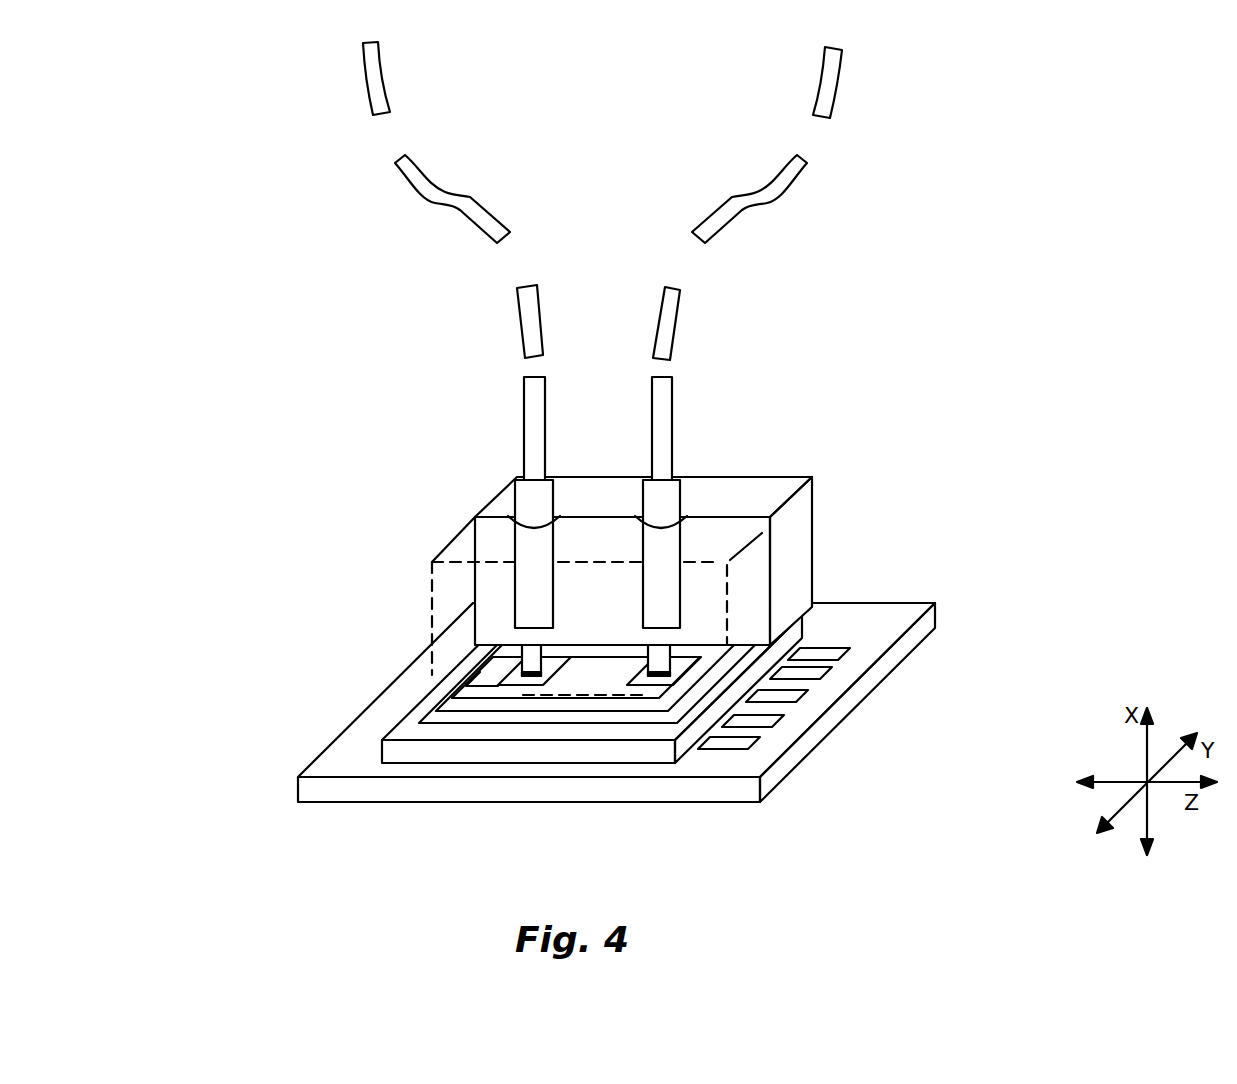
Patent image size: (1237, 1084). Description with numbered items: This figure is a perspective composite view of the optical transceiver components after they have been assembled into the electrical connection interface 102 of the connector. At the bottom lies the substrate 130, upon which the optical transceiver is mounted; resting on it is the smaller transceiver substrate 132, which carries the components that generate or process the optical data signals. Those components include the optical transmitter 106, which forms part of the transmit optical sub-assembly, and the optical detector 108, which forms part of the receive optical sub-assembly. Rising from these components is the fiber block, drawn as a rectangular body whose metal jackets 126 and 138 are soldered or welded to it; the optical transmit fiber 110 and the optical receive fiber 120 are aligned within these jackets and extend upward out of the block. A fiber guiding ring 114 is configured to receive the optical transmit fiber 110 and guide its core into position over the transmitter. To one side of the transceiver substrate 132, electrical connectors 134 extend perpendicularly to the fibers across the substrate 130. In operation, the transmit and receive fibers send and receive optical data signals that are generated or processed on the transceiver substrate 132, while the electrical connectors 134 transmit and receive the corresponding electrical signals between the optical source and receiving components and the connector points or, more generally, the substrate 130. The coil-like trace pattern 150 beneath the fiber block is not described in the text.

The electrical connection interface 102 is at (913, 635).
The optical transmitter 106 is at (650, 678).
The optical detector 108 is at (523, 678).
The optical transmit fiber 110 is at (680, 327).
The fiber guiding ring 114 is at (663, 498).
The optical receive fiber 120 is at (521, 326).
The metal jacket 126 is at (797, 545).
The substrate 130 is at (313, 786).
The transceiver substrate 132 is at (382, 750).
The electrical connectors 134 is at (822, 673).
The metal jacket 138 is at (535, 500).
The coil 150 is at (465, 680).